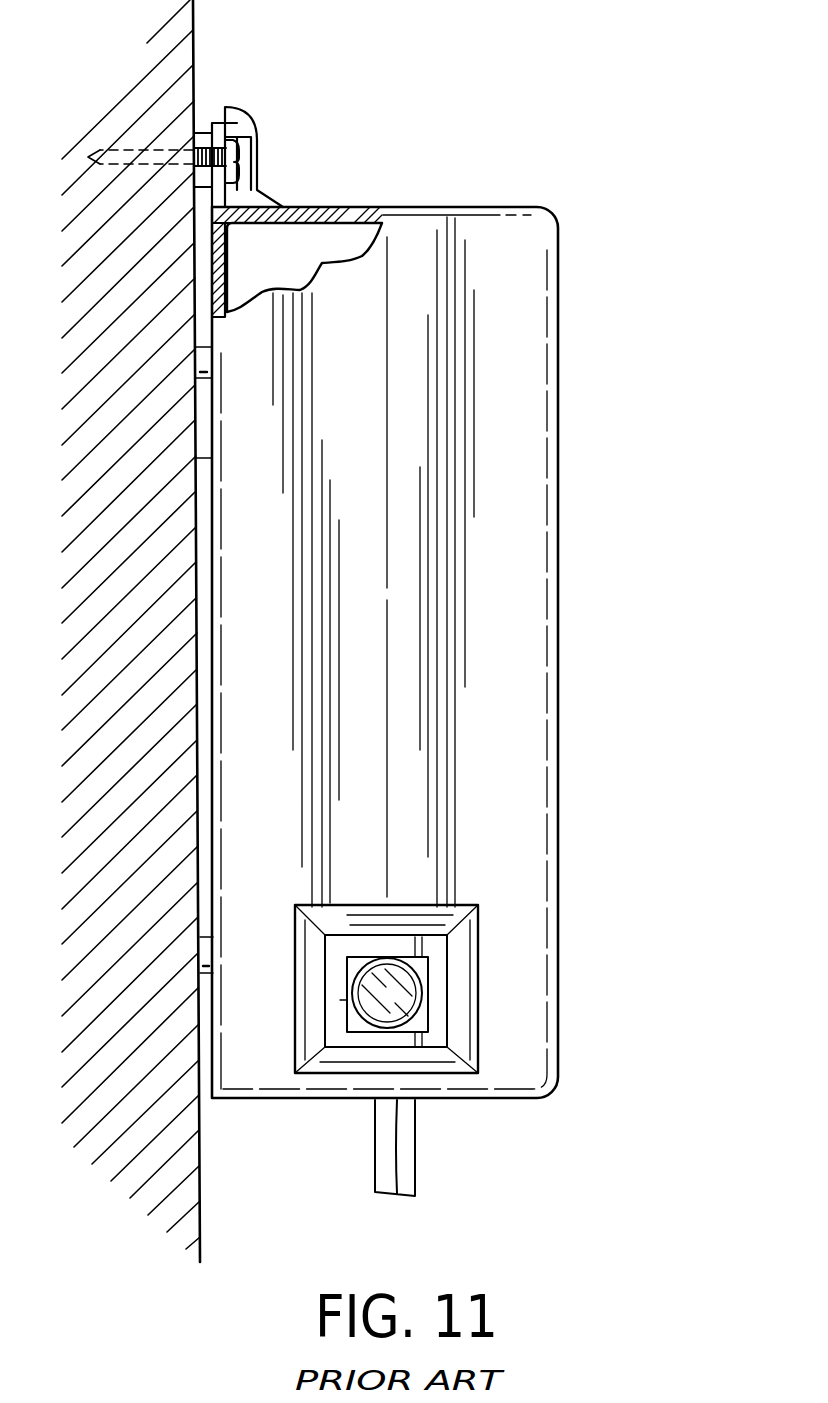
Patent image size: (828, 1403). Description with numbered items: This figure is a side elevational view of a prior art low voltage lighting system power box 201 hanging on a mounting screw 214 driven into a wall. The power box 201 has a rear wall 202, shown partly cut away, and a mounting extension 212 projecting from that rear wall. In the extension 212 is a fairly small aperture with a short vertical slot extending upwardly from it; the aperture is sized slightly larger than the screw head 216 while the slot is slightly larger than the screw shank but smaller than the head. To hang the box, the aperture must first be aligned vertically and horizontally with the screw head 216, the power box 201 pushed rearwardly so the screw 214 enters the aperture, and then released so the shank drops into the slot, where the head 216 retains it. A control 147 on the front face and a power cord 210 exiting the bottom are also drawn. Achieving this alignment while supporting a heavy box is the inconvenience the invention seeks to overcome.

The prior art water heater 201 is at (507, 581).
The housing wall 202 is at (297, 262).
The mounting bracket 212 is at (237, 191).
The mounting screw 214 is at (216, 130).
The screw head 216 is at (233, 160).
The control knob 147 is at (375, 1013).
The outlet pipe 210 is at (417, 1165).